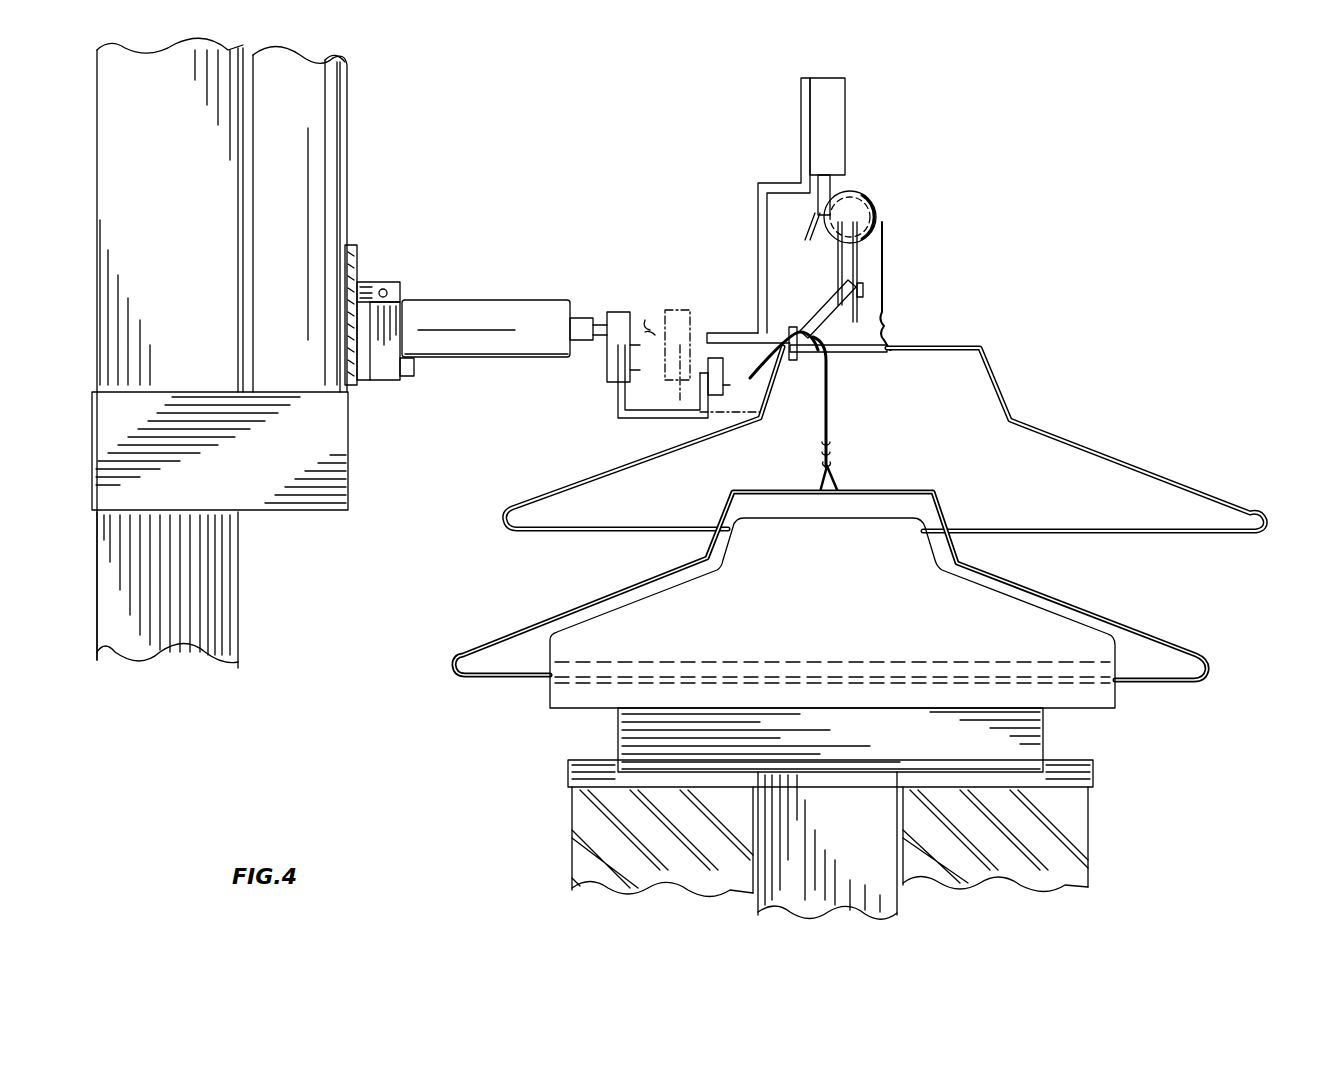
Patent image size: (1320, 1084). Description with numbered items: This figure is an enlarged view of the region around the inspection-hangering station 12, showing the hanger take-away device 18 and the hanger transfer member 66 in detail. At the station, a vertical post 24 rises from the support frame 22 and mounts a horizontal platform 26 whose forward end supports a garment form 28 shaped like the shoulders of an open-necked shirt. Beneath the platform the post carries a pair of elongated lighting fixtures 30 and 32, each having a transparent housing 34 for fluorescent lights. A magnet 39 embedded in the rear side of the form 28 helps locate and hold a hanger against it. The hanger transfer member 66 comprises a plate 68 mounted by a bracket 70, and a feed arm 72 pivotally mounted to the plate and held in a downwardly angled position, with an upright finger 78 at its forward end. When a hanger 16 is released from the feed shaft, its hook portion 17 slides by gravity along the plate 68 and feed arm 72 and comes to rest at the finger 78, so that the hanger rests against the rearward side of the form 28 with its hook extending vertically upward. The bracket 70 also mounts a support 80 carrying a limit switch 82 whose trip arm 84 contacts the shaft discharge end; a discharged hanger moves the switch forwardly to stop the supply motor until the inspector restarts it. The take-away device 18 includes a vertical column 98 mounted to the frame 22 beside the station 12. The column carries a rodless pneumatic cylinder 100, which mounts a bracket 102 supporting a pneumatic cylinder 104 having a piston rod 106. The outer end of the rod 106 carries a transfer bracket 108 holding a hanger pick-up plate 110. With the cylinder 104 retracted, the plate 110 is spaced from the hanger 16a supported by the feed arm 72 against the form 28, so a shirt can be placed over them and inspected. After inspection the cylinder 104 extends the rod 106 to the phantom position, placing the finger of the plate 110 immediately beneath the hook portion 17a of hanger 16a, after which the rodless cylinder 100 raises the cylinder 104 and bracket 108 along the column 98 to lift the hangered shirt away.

The inspection-hangering station 12 is at (480, 719).
The hanger 16 is at (1008, 394).
The hanger 16a is at (1200, 666).
The hook portion 17 is at (876, 205).
The hook portion 17a is at (830, 362).
The hanger take-away device 18 is at (543, 242).
The support frame 22 is at (117, 676).
The vertical post 24 is at (797, 902).
The platform 26 is at (1045, 725).
The garment form 28 is at (838, 624).
The lighting fixture 30 is at (566, 888).
The lighting fixture 32 is at (1102, 873).
The transparent housing 34 is at (722, 903).
The magnet 39 is at (972, 665).
The hanger transfer member 66 is at (886, 260).
The plate 68 is at (860, 252).
The bracket 70 is at (853, 352).
The feed arm 72 is at (822, 302).
The finger 78 is at (792, 327).
The support 80 is at (758, 217).
The limit switch 82 is at (832, 92).
The trip arm 84 is at (833, 190).
The vertical column 98 is at (182, 212).
The rodless pneumatic cylinder 100 is at (352, 170).
The bracket 102 is at (404, 260).
The pneumatic cylinder 104 is at (503, 318).
The piston rod 106 is at (652, 312).
The transfer bracket 108 is at (628, 420).
The hanger pick-up plate 110 is at (714, 356).